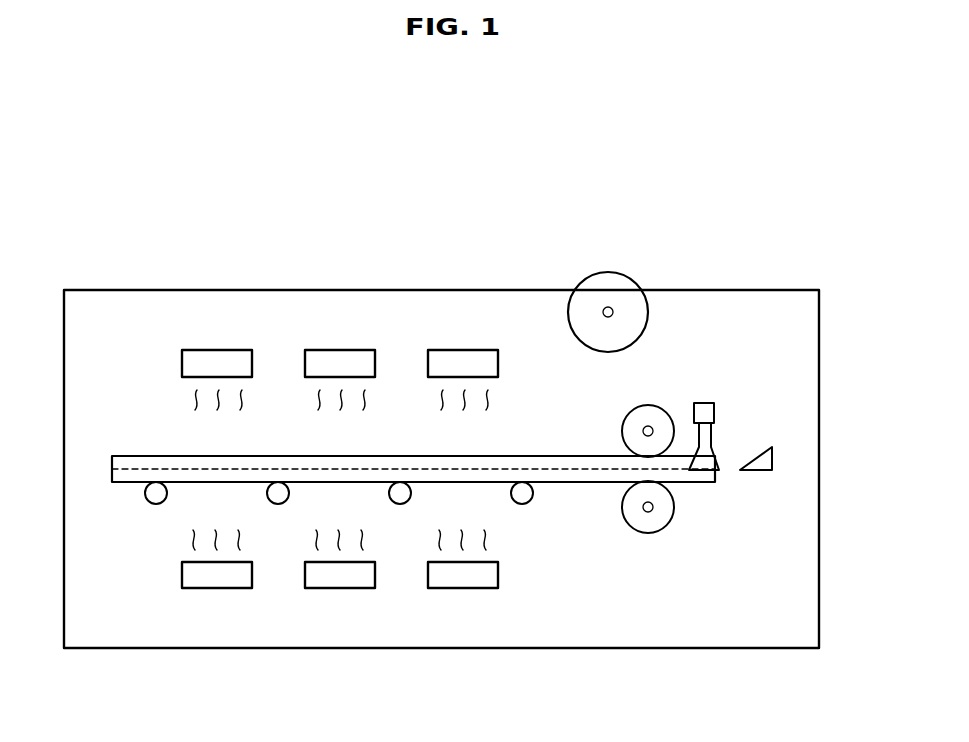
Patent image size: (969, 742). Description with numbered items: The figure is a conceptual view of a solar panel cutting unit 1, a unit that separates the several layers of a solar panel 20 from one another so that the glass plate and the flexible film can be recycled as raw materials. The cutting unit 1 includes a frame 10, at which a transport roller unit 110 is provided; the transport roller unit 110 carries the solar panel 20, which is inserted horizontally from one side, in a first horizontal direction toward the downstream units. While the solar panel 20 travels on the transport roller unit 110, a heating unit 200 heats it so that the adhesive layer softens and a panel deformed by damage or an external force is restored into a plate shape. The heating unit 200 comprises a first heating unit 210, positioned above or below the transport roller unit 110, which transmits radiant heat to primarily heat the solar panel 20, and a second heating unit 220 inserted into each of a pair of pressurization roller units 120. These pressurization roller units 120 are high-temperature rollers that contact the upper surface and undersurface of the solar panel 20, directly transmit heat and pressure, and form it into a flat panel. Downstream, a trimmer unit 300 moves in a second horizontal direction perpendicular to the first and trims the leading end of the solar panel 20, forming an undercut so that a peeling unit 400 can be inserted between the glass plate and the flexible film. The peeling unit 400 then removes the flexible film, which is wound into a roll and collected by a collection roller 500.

The solar panel cutting unit 1 is at (786, 130).
The frame 10 is at (778, 648).
The solar panel 20 is at (112, 457).
The transport roller unit 110 is at (156, 504).
The pressurization roller units 120 is at (667, 435).
The heating unit 200 is at (680, 143).
The first heating unit 210 is at (340, 357).
The second heating unit 220 is at (648, 507).
The trimmer unit 300 is at (722, 388).
The peeling unit 400 is at (776, 433).
The collection roller 500 is at (597, 288).